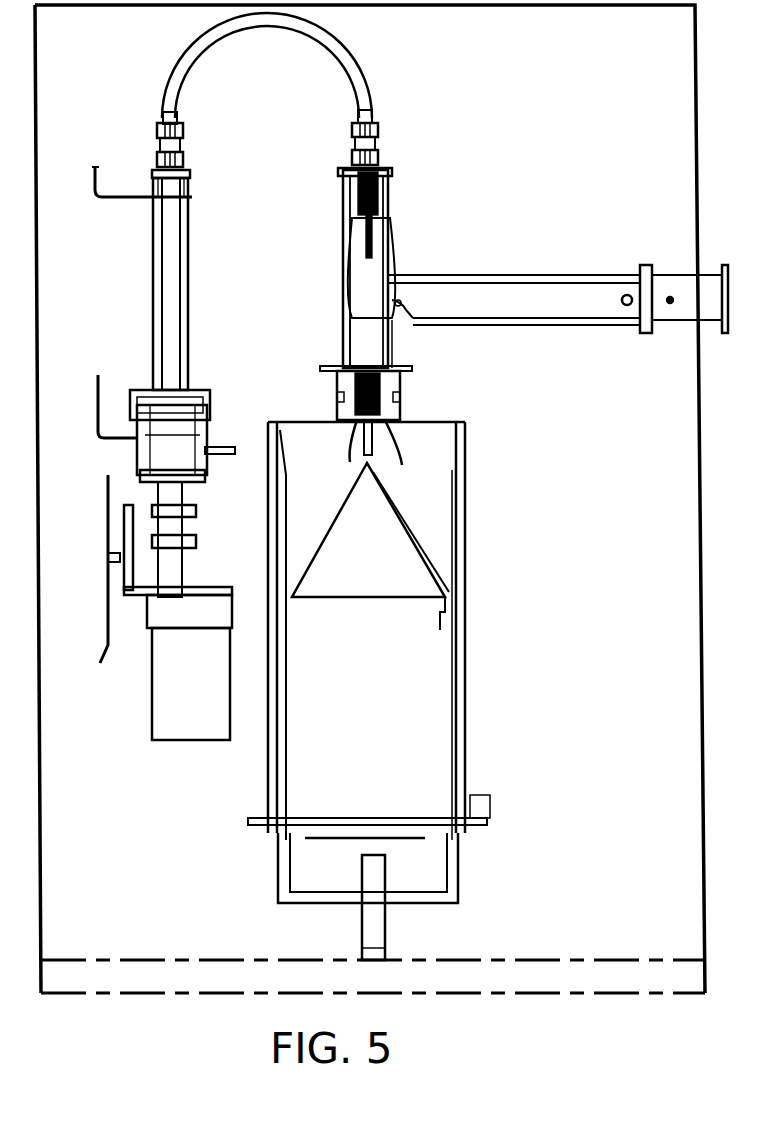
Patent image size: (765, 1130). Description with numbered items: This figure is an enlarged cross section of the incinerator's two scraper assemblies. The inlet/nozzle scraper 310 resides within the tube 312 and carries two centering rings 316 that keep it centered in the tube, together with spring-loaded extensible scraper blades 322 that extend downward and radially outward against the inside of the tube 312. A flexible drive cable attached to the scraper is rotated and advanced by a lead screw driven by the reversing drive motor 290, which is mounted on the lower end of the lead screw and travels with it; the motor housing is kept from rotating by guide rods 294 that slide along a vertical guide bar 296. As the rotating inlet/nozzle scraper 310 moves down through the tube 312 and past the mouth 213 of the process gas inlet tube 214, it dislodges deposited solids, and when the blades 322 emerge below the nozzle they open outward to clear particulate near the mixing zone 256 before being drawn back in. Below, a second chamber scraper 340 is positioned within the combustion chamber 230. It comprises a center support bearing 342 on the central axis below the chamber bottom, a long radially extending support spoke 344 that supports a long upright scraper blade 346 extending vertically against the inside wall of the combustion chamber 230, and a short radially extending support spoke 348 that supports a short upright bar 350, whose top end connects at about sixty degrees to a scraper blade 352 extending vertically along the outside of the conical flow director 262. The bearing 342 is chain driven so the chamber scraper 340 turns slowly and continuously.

The mouth 213 is at (345, 312).
The process gas inlet tube 214 is at (533, 312).
The combustion chamber 230 is at (443, 507).
The mixing zone 256 is at (440, 447).
The flow director 262 is at (395, 578).
The drive motor 290 is at (160, 682).
The guide rods 294 is at (108, 557).
The vertical guide bar 296 is at (108, 600).
The inlet/nozzle scraper 310 is at (390, 200).
The tube 312 is at (348, 216).
The centering rings 316 is at (337, 415).
The scraper blades 322 is at (412, 458).
The chamber scraper 340 is at (360, 840).
The center support bearing 342 is at (365, 925).
The long radially extending support spoke 344 is at (332, 895).
The long upright scraper blade 346 is at (297, 690).
The short radially extending support spoke 348 is at (410, 905).
The short upright bar 350 is at (458, 666).
The scraper blade 352 is at (440, 535).